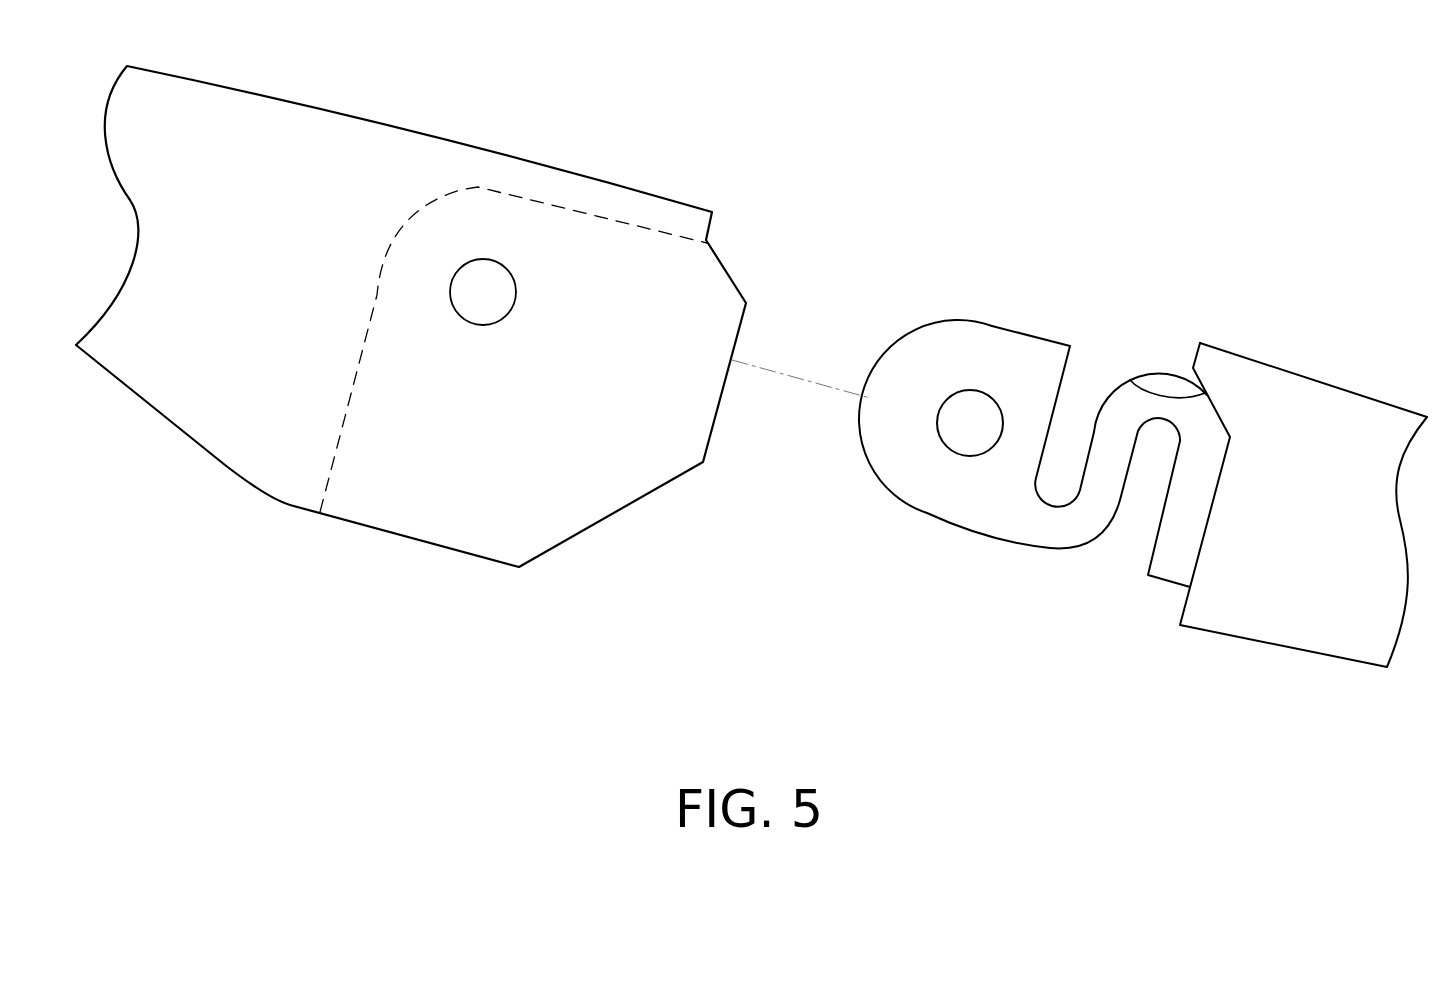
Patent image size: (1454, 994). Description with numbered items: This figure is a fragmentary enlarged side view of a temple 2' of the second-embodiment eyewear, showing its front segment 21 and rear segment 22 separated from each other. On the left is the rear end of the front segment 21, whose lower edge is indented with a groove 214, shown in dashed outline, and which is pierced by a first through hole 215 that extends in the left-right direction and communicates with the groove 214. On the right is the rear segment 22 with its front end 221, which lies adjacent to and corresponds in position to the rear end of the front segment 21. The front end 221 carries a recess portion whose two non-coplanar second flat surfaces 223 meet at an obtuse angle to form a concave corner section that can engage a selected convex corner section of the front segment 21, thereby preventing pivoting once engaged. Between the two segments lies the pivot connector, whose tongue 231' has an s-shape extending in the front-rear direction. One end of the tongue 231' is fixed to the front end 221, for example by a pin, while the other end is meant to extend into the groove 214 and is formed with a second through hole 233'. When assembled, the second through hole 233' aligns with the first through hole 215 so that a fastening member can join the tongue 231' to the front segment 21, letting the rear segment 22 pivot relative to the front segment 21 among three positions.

The front segment 21 is at (277, 132).
The groove 214 is at (383, 258).
The first through hole 215 is at (467, 298).
The temple 2' is at (871, 231).
The tongue 231' is at (1033, 436).
The second through hole 233' is at (895, 423).
The second flat surfaces 223 is at (1132, 382).
The rear segment 22 is at (1395, 425).
The front end 221 is at (1302, 408).